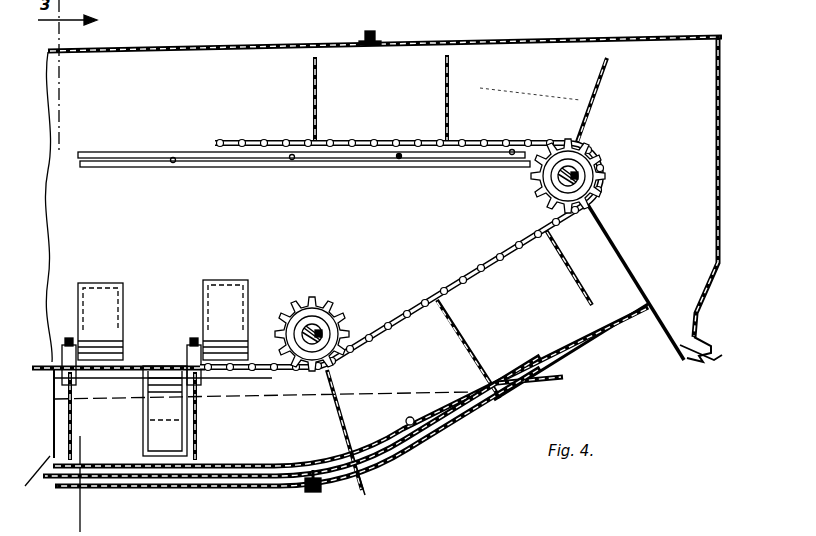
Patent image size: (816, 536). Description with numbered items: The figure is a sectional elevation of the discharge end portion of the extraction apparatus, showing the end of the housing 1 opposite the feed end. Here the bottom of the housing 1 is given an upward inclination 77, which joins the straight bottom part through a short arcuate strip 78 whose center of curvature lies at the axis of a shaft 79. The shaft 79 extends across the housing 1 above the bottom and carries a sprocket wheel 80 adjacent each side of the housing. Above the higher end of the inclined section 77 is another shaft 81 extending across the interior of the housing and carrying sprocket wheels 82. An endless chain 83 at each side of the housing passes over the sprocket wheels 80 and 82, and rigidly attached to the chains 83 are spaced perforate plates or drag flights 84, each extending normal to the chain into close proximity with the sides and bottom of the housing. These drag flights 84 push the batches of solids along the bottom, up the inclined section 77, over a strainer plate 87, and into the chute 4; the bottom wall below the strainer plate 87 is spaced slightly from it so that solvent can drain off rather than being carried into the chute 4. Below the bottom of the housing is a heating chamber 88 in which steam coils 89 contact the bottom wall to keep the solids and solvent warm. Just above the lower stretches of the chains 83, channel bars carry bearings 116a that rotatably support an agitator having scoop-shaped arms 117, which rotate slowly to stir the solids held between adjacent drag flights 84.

The housing 1 is at (540, 37).
The chute 4 is at (690, 338).
The upward inclination 77 is at (432, 426).
The short arcuate strip 78 is at (357, 473).
The shaft 79 is at (318, 330).
The sprocket wheel 80 is at (305, 298).
The shaft 81 is at (556, 177).
The sprocket wheel 82 is at (547, 196).
The endless chain 83 is at (234, 142).
The drag flight 84 is at (452, 80).
The strainer plate 87 is at (560, 336).
The heating chamber 88 is at (300, 490).
The steam coil 89 is at (258, 472).
The bearing 116a is at (186, 356).
The agitator arm 117 is at (108, 296).